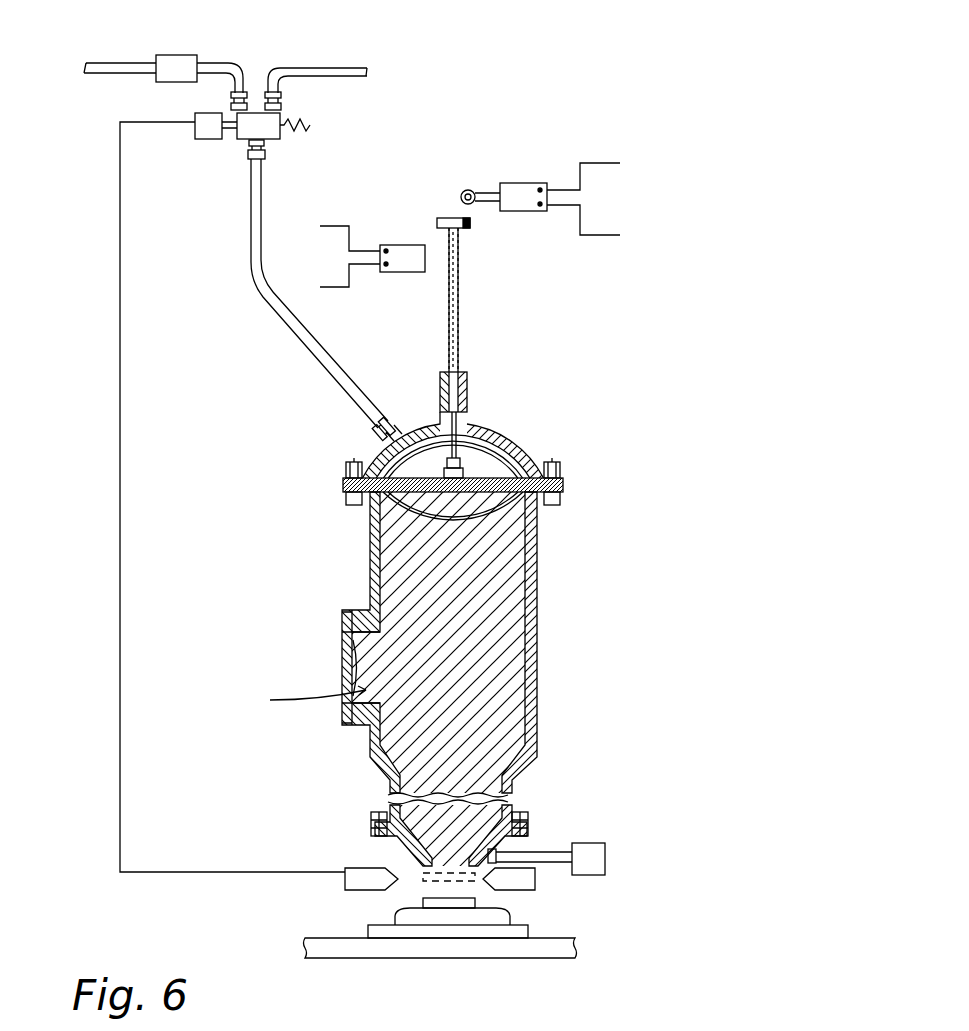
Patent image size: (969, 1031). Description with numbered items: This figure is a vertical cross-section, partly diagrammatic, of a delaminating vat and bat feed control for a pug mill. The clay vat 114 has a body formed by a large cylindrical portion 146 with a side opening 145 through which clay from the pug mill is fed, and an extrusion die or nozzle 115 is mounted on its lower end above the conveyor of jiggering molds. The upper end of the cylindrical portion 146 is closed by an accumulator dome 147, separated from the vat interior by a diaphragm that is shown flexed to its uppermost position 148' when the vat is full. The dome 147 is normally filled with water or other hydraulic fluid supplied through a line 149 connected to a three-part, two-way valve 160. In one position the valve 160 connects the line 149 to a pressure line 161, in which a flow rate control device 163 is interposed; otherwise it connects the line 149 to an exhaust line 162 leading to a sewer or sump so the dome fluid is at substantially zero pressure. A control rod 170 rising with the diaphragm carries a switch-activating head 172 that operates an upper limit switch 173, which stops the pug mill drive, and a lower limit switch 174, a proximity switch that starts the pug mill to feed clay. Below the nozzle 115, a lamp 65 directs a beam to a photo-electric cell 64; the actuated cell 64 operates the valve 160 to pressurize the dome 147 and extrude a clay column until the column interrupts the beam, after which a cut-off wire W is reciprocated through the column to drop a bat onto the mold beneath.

The pressure line 161 is at (113, 62).
The flow rate control device 163 is at (198, 57).
The exhaust line 162 is at (349, 78).
The three-part, two-way valve 160 is at (278, 139).
The line 149 is at (284, 326).
The upper limit switch 173 is at (530, 184).
The lower limit switch 174 is at (398, 245).
The switch-activating head 172 is at (445, 218).
The control rod 170 is at (459, 330).
The accumulator dome 147 is at (414, 426).
The uppermost position of diaphragm 148' is at (476, 458).
The cylindrical portion 146 is at (538, 569).
The side opening 145 is at (371, 624).
The clay vat 114 is at (428, 686).
The extrusion die or nozzle 115 is at (400, 840).
The cut-off wire W is at (497, 855).
The photo-electric cell 64 is at (363, 891).
The lamp 65 is at (520, 891).